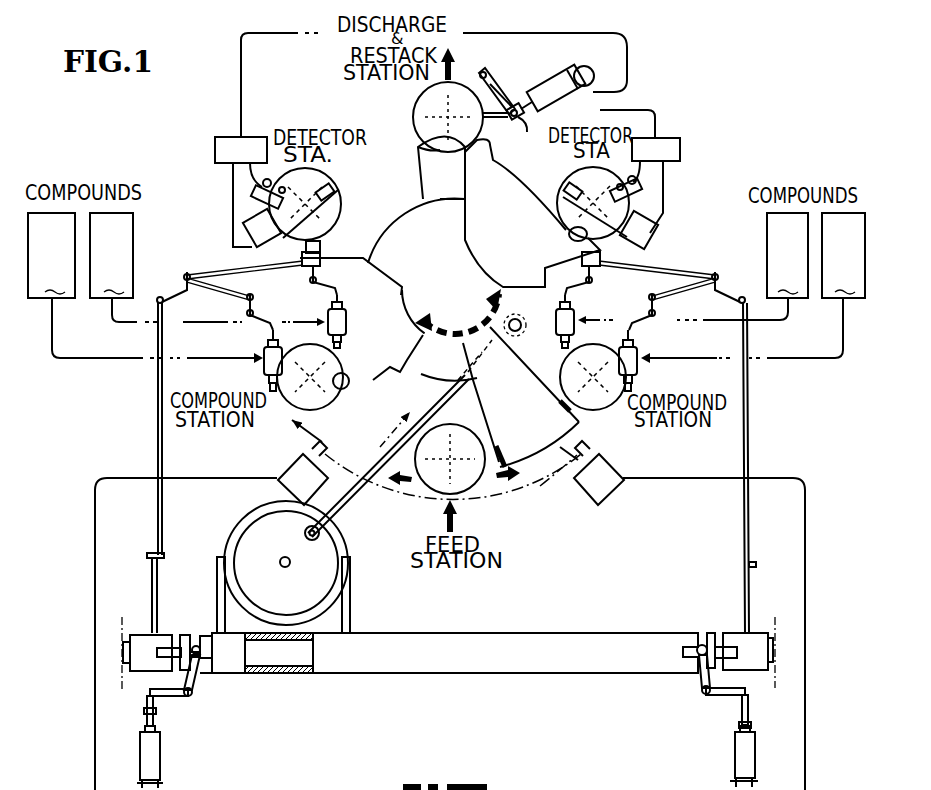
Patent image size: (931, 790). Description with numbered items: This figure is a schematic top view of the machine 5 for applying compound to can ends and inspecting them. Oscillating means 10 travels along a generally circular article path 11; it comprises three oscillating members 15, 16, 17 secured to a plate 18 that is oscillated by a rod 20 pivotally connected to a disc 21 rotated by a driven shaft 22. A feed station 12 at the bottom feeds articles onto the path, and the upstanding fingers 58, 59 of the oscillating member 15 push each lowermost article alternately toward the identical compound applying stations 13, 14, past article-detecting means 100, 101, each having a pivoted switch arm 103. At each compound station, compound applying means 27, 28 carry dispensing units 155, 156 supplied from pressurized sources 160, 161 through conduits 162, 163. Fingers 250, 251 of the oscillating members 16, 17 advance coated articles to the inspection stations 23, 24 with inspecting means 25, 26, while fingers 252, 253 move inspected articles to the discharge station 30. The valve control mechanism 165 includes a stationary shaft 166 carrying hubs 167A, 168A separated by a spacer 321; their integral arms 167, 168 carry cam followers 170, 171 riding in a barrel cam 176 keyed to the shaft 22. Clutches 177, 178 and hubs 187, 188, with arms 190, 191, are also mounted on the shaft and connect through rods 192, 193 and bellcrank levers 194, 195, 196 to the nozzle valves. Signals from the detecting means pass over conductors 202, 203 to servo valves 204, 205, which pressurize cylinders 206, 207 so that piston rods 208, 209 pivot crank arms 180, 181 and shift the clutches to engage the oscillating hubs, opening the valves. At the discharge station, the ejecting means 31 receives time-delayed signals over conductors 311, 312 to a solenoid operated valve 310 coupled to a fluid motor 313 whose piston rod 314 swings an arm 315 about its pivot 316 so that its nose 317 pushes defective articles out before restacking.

The machine 5 is at (183, 132).
The oscillating means 10 is at (419, 197).
The article path 11 is at (548, 477).
The feed station 12 is at (470, 494).
The compound applying station 13 is at (612, 414).
The compound applying station 14 is at (325, 413).
The oscillating member 15 is at (516, 398).
The oscillating member 16 is at (507, 238).
The oscillating member 17 is at (396, 346).
The plate 18 is at (450, 248).
The rod 20 is at (358, 495).
The disc 21 is at (291, 604).
The driven shaft 22 is at (284, 560).
The inspection station 23 is at (649, 247).
The inspection station 24 is at (365, 172).
The inspecting means 25 is at (652, 210).
The inspecting means 26 is at (246, 210).
The compound applying means 27 is at (646, 341).
The compound applying means 28 is at (256, 335).
The discharge station 30 is at (446, 162).
The ejecting means 31 is at (528, 81).
The finger 58 is at (503, 442).
The finger 59 is at (558, 411).
The article-detecting means 100 is at (620, 497).
The article-detecting means 101 is at (290, 462).
The switch arm 103 is at (340, 448).
The compound dispensing unit 155 is at (344, 310).
The compound dispensing unit 156 is at (262, 365).
The pressurized source 160 is at (418, 255).
The pressurized source 161 is at (477, 255).
The conduit 162 is at (118, 323).
The conduit 163 is at (102, 360).
The control mechanism 165 is at (568, 680).
The stationary shaft 166 is at (287, 660).
The arm 167 is at (217, 593).
The hub 167A is at (220, 666).
The arm 168 is at (356, 598).
The hub 168A is at (430, 650).
The cam follower 170 is at (232, 540).
The cam follower 171 is at (343, 537).
The barrel cam 176 is at (351, 612).
The clutch 177 is at (186, 630).
The clutch 178 is at (700, 618).
The crank arm 180 is at (185, 705).
The crank arm 181 is at (700, 703).
The hub 187 is at (140, 632).
The hub 188 is at (755, 637).
The arm 190 is at (145, 567).
The arm 191 is at (757, 583).
The rod 192 is at (167, 508).
The rod 193 is at (742, 516).
The bellcrank lever 194 is at (180, 277).
The bellcrank lever 195 is at (255, 298).
The bellcrank lever 196 is at (325, 265).
The conductor 202 is at (805, 556).
The conductor 203 is at (95, 560).
The servo valve 204 is at (728, 786).
The servo valve 205 is at (167, 784).
The cylinder 206 is at (755, 752).
The cylinder 207 is at (160, 750).
The piston rod 208 is at (750, 713).
The piston rod 209 is at (145, 710).
The finger 250 is at (567, 236).
The finger 251 is at (349, 381).
The finger 252 is at (428, 143).
The finger 253 is at (333, 233).
The solenoid operated valve 310 is at (598, 66).
The conductor 311 is at (648, 110).
The conductor 312 is at (244, 80).
The fluid motor 313 is at (553, 102).
The piston rod 314 is at (527, 113).
The arm 315 is at (500, 78).
The pivot 316 is at (482, 72).
The nose 317 is at (481, 108).
The spacer 321 is at (308, 674).